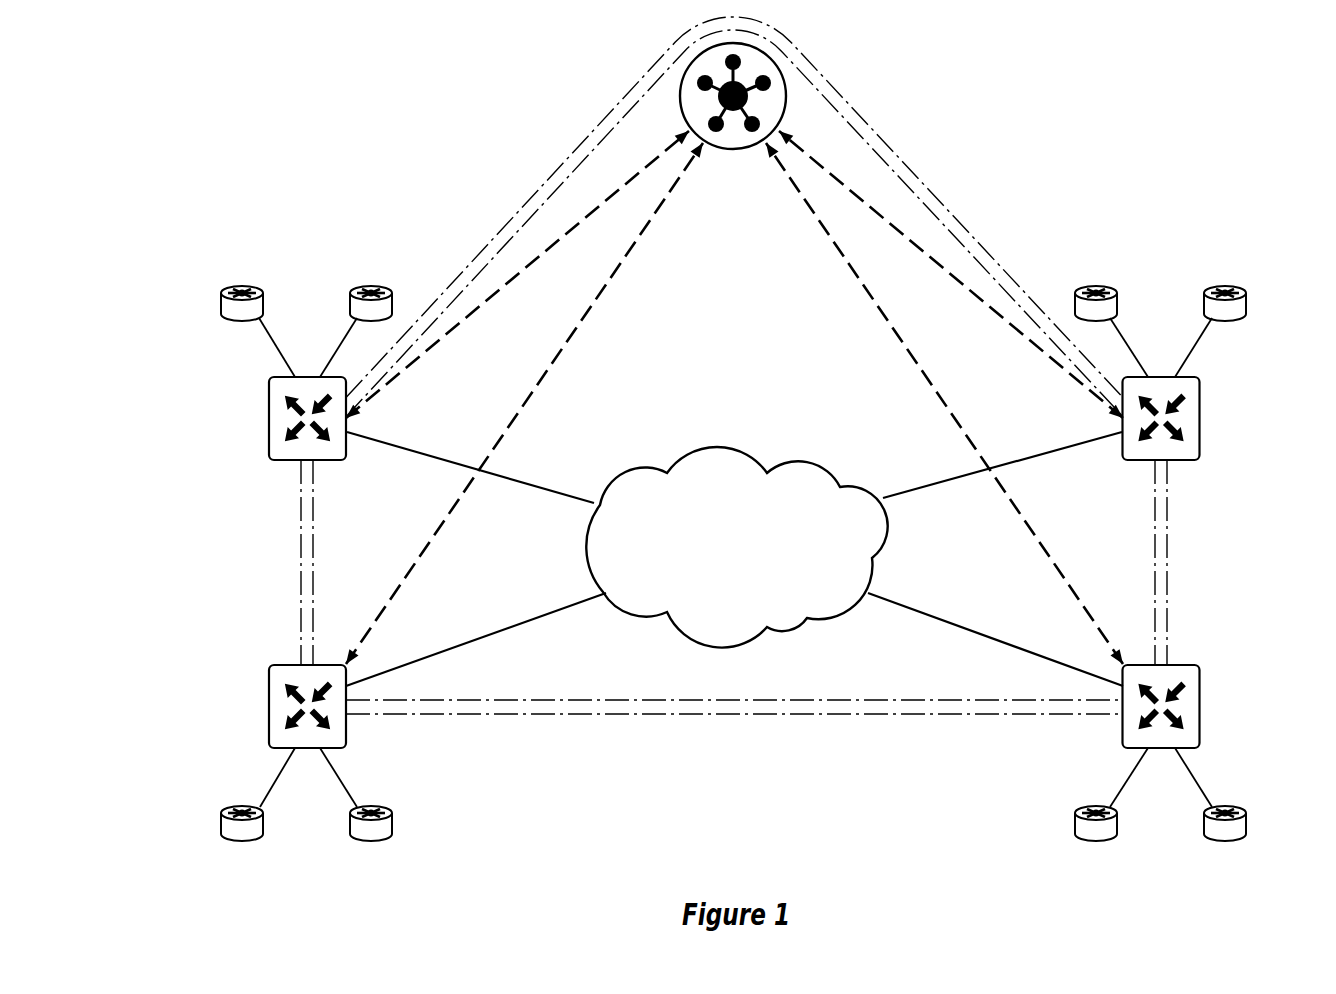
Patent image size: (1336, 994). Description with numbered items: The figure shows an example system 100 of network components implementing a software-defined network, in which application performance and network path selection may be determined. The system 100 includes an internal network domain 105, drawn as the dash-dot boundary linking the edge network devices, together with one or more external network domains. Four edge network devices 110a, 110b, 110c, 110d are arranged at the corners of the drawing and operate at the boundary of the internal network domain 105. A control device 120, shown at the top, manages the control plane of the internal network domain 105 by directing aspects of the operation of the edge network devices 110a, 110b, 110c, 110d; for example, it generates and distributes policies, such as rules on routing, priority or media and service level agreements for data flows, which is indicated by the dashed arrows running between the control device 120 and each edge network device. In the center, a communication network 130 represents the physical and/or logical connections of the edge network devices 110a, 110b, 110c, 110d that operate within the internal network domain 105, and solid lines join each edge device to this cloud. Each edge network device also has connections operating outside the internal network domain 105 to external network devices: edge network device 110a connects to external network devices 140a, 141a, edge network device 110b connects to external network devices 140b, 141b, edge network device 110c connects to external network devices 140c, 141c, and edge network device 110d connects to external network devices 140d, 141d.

The system 100 is at (1203, 88).
The internal network domain 105 is at (942, 200).
The edge network device 110a is at (269, 420).
The edge network device 110b is at (269, 707).
The edge network device 110c is at (1199, 420).
The edge network device 110d is at (1199, 707).
The control device 120 is at (787, 90).
The communication network 130 is at (749, 556).
The external network device 140a is at (242, 286).
The external network device 141a is at (371, 286).
The external network device 140b is at (242, 841).
The external network device 141b is at (371, 841).
The external network device 140c is at (1096, 286).
The external network device 141c is at (1225, 286).
The external network device 140d is at (1096, 841).
The external network device 141d is at (1225, 841).